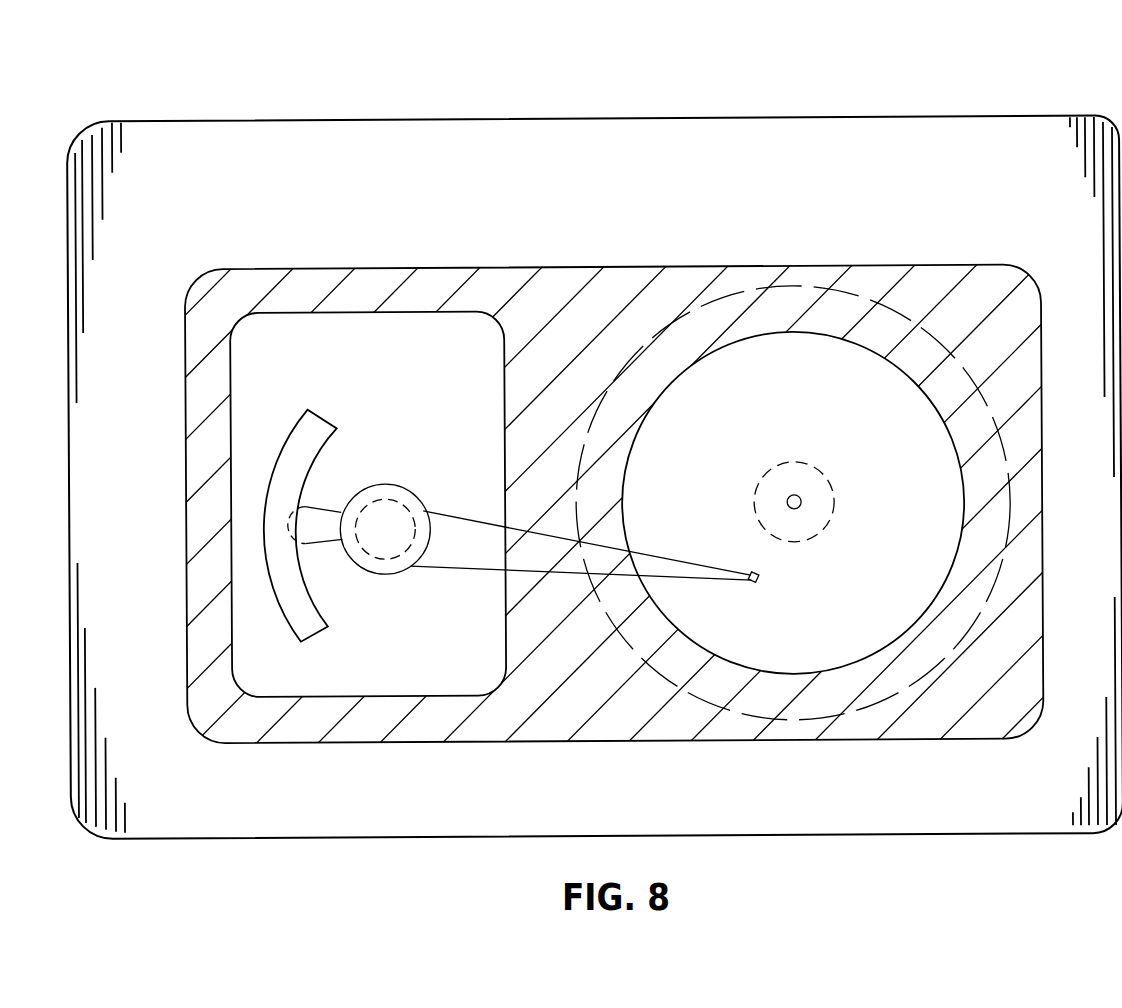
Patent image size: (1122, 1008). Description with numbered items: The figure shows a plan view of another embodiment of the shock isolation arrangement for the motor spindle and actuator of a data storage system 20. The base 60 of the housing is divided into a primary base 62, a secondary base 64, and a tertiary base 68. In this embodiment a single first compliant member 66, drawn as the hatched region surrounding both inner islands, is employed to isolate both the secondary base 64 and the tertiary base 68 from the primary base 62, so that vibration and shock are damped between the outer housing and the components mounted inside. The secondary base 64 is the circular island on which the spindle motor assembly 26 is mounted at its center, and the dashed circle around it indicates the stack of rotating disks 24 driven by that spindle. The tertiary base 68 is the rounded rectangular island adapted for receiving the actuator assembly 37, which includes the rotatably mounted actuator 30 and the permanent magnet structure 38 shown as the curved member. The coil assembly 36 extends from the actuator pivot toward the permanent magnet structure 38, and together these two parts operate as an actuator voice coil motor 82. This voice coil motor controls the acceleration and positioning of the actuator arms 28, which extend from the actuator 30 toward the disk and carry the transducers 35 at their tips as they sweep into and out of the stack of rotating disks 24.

The data storage system 20 is at (1026, 94).
The rotating disks 24 is at (1000, 440).
The spindle motor assembly 26 is at (838, 492).
The actuator arms 28 is at (552, 574).
The rotatably mounted actuator 30 is at (387, 574).
The transducers 35 is at (760, 585).
The coil assembly 36 is at (322, 504).
The actuator assembly 37 is at (426, 490).
The permanent magnet structure 38 is at (283, 612).
The base 60 is at (347, 118).
The primary base 62 is at (616, 176).
The secondary base 64 is at (802, 408).
The first compliant member 66 is at (738, 282).
The tertiary base 68 is at (377, 363).
The actuator voice coil motor 82 is at (336, 578).